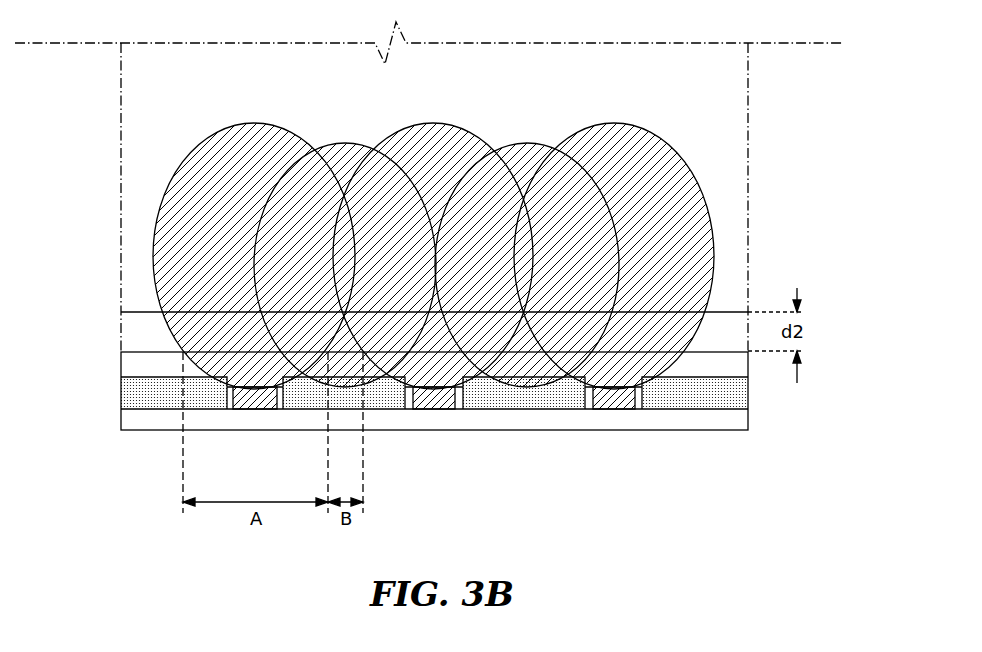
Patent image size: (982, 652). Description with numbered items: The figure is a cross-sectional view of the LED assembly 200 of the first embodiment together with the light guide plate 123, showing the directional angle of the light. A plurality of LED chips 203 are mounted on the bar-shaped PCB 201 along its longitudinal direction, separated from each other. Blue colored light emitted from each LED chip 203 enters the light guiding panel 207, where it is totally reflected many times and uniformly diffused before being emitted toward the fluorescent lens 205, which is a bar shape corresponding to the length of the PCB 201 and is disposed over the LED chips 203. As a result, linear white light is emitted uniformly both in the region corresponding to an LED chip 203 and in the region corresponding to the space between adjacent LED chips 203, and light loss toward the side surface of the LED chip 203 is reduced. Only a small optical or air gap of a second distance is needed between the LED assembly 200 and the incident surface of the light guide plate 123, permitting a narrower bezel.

The light guide plate 123 is at (720, 88).
The LED assembly 200 is at (437, 448).
The PCB 201 is at (682, 418).
The LED chip 203 is at (434, 439).
The fluorescent lens 205 is at (707, 367).
The light guiding panel 207 is at (527, 383).